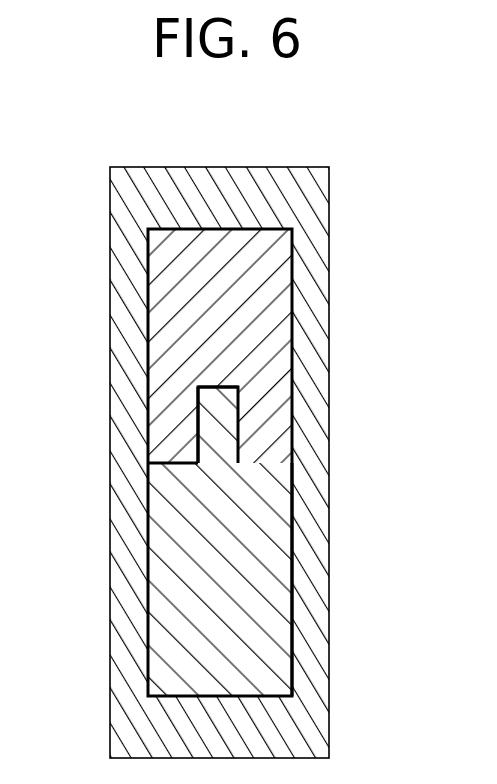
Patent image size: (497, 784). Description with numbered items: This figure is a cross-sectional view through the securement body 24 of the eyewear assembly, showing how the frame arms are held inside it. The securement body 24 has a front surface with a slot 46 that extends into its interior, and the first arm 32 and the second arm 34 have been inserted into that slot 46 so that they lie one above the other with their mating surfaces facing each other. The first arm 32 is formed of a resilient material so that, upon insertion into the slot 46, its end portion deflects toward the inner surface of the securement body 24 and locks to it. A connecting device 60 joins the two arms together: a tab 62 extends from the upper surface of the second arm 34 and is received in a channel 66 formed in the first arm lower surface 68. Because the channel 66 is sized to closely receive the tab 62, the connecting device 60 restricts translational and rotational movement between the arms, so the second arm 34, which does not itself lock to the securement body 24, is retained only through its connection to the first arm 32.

The securement body 24 is at (272, 167).
The first arm 32 is at (295, 242).
The second arm 34 is at (293, 608).
The slot 46 is at (293, 540).
The connecting device 60 is at (198, 420).
The tab 62 is at (232, 412).
The channel 66 is at (197, 392).
The first arm lower surface 68 is at (177, 463).